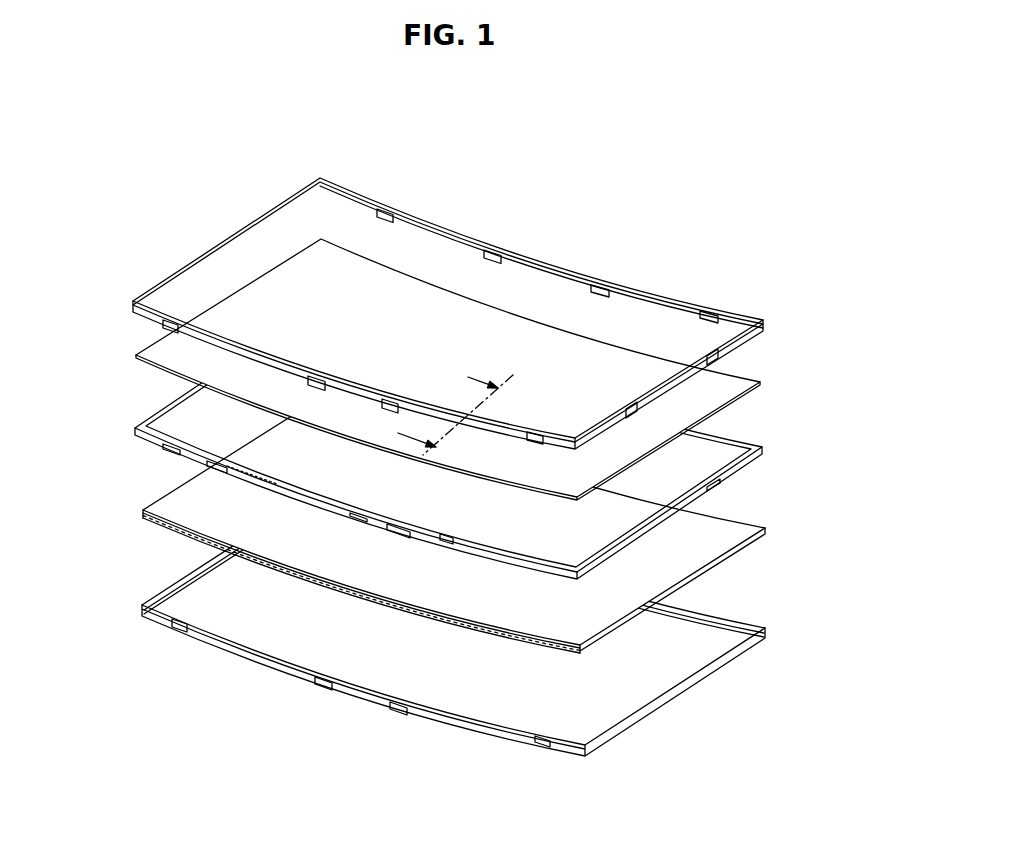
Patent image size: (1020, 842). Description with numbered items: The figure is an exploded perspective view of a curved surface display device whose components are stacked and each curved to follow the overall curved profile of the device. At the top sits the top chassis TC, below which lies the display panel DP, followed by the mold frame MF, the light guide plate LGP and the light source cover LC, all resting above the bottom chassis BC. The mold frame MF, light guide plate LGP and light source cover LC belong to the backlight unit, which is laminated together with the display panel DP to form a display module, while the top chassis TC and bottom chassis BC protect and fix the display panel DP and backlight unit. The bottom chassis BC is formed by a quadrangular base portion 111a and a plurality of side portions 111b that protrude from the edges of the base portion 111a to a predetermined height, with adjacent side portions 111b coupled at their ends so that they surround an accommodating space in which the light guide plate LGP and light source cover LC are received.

The top chassis TC is at (768, 324).
The display panel DP is at (768, 382).
The mold frame MF is at (768, 450).
The light guide plate LGP is at (740, 530).
The light source cover LC is at (173, 533).
The bottom chassis BC is at (442, 625).
The base portion 111a is at (397, 633).
The side portions 111b is at (158, 590).